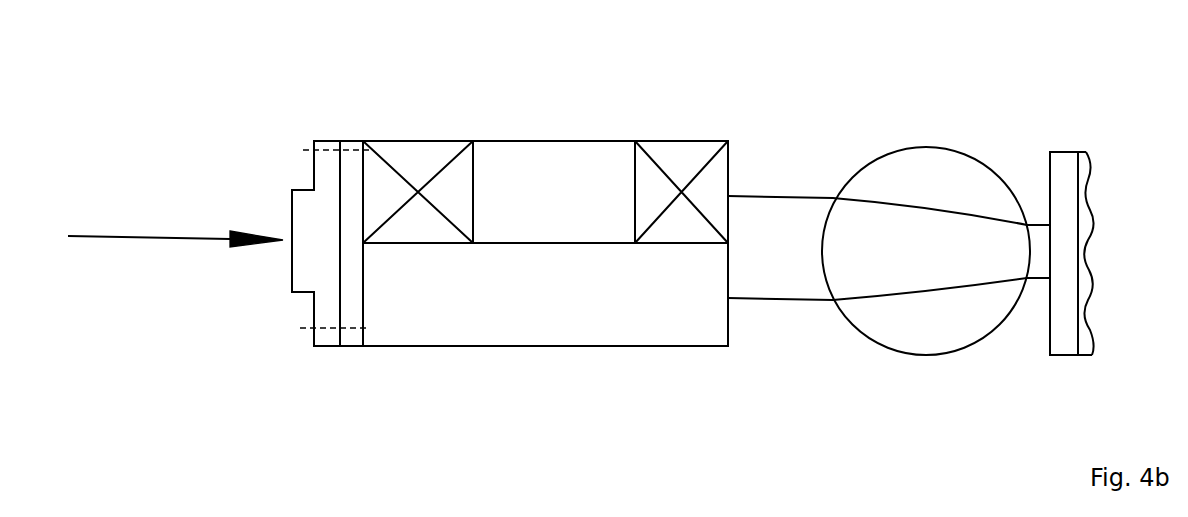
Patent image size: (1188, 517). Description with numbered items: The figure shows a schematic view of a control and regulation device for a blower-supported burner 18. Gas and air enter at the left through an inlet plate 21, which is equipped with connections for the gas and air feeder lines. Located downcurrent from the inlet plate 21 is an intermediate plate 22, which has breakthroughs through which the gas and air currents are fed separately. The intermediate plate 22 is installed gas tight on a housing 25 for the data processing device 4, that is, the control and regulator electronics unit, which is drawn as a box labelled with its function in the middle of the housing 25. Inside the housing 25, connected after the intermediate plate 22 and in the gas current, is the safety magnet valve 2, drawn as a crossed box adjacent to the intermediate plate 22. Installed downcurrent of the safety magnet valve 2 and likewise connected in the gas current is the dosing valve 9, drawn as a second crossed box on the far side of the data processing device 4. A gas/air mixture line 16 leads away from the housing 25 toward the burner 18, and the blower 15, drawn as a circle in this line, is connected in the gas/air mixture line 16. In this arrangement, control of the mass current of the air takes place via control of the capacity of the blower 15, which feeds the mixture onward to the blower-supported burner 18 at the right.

The safety magnet valve 2 is at (387, 157).
The data processing device 4 is at (547, 140).
The dosing valve 9 is at (687, 173).
The blower 15 is at (900, 180).
The gas/air mixture line 16 is at (787, 270).
The blower-supported burner 18 is at (1067, 163).
The inlet plate 21 is at (327, 170).
The intermediate plate 22 is at (353, 148).
The housing 25 is at (692, 337).